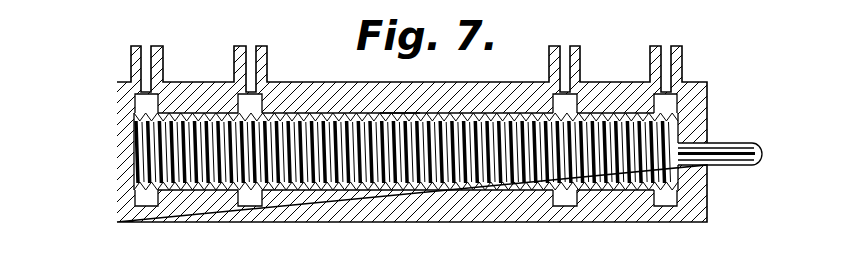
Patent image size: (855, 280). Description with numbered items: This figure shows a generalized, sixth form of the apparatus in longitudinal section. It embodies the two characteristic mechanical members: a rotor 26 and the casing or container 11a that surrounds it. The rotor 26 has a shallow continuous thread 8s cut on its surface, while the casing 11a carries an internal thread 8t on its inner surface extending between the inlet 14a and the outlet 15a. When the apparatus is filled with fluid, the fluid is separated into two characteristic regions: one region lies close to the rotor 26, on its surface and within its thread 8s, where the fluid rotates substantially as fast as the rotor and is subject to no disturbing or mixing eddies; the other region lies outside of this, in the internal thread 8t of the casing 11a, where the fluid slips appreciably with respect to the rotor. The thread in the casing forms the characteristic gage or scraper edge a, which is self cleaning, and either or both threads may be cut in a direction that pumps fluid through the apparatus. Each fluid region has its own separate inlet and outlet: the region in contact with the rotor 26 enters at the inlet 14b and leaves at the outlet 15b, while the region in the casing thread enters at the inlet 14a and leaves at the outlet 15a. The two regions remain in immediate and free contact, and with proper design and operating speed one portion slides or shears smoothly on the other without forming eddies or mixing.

The casing 11a is at (472, 95).
The inlet 14a is at (250, 197).
The inlet 14b is at (145, 197).
The outlet 15a is at (566, 197).
The outlet 15b is at (668, 197).
The rotor 26 is at (163, 151).
The rotor thread 8s is at (335, 112).
The internal thread 8t is at (420, 110).
The gage or scraper edge a is at (322, 190).